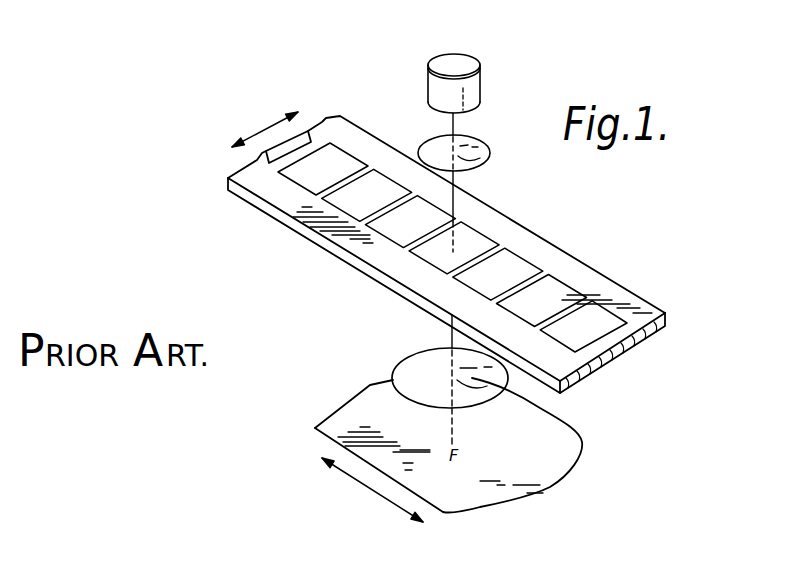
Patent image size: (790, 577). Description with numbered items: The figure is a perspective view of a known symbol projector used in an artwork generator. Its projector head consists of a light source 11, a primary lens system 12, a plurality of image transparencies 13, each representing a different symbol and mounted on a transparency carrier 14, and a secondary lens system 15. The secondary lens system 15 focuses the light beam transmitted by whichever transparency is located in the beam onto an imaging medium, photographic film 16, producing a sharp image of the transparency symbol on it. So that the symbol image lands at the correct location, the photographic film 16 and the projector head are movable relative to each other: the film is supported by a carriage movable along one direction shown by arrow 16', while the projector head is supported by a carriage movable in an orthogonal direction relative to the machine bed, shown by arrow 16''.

The light source 11 is at (467, 98).
The primary lens system 12 is at (482, 155).
The image transparencies 13 is at (343, 163).
The transparency carrier 14 is at (595, 376).
The secondary lens system 15 is at (421, 352).
The photographic film 16 is at (429, 441).
The arrow 16' is at (351, 491).
The arrow 16'' is at (279, 102).